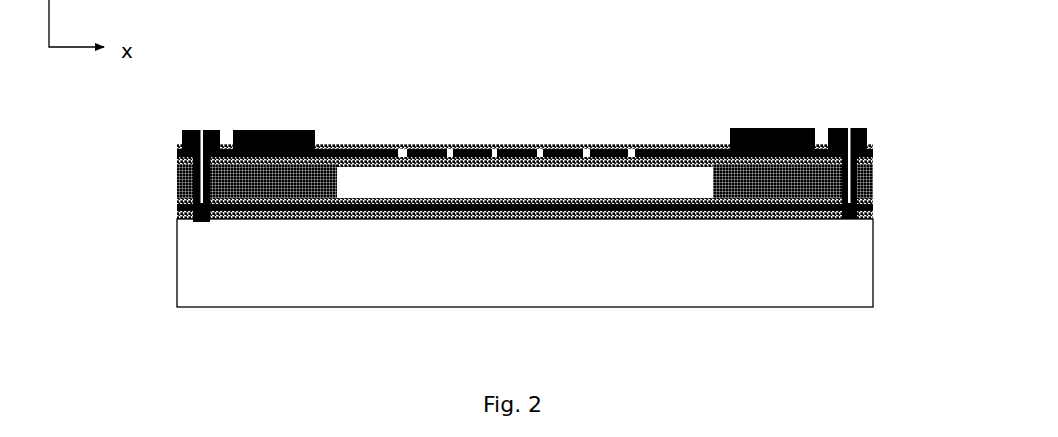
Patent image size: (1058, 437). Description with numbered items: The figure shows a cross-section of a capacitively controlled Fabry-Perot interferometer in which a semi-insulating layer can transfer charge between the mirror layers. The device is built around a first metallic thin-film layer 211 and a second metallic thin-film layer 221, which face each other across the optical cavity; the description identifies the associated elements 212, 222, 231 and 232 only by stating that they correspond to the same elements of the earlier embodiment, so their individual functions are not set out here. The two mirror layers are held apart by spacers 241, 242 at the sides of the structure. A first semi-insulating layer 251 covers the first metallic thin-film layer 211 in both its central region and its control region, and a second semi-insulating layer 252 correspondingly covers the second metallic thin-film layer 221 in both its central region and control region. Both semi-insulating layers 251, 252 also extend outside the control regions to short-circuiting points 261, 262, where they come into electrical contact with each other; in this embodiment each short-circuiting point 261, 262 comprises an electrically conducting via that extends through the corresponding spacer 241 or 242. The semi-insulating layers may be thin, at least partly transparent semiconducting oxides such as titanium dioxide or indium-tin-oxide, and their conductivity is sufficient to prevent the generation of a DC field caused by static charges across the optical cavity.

The first metallic thin-film layer 211 is at (522, 164).
The electrode segments 212 is at (552, 142).
The second metallic thin-film layer 221 is at (480, 221).
The bonding layer 222 is at (762, 222).
The right electrode pad 231 is at (769, 125).
The left electrode pad 232 is at (276, 126).
The spacer 241 is at (172, 180).
The spacer 242 is at (877, 178).
The first semi-insulating layer 251 is at (386, 148).
The second semi-insulating layer 252 is at (411, 200).
The short-circuiting point 261 is at (864, 123).
The short-circuiting point 262 is at (176, 126).